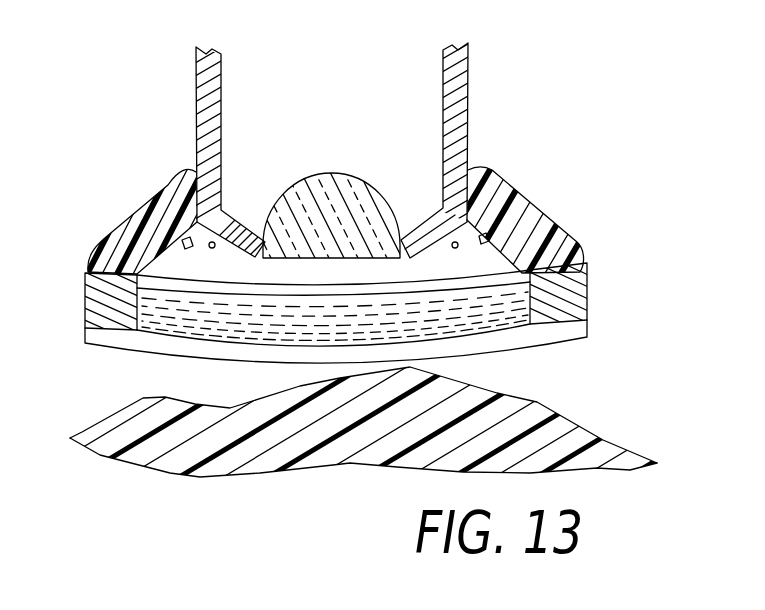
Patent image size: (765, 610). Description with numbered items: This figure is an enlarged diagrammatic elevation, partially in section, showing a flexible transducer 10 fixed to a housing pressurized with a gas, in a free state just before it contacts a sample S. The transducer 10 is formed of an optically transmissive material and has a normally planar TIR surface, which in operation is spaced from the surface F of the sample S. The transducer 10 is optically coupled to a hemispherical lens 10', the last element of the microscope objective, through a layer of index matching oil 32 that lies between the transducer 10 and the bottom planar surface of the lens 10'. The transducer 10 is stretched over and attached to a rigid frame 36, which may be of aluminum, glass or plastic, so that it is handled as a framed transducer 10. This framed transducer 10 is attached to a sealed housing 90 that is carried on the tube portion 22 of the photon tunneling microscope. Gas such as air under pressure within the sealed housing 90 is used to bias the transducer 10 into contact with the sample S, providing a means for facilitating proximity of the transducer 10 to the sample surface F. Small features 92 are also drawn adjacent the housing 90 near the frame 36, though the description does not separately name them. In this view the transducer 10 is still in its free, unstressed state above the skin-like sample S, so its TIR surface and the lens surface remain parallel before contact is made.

The tube portion 22 is at (196, 98).
The sealed housing 90 is at (136, 212).
The nubs 92 is at (212, 249).
The hemispherical lens 10' is at (329, 201).
The transducer 10 is at (337, 321).
The index matching oil 32 is at (183, 317).
The rigid frame 36 is at (85, 288).
The surface of a sample F is at (260, 403).
The sample S is at (340, 447).